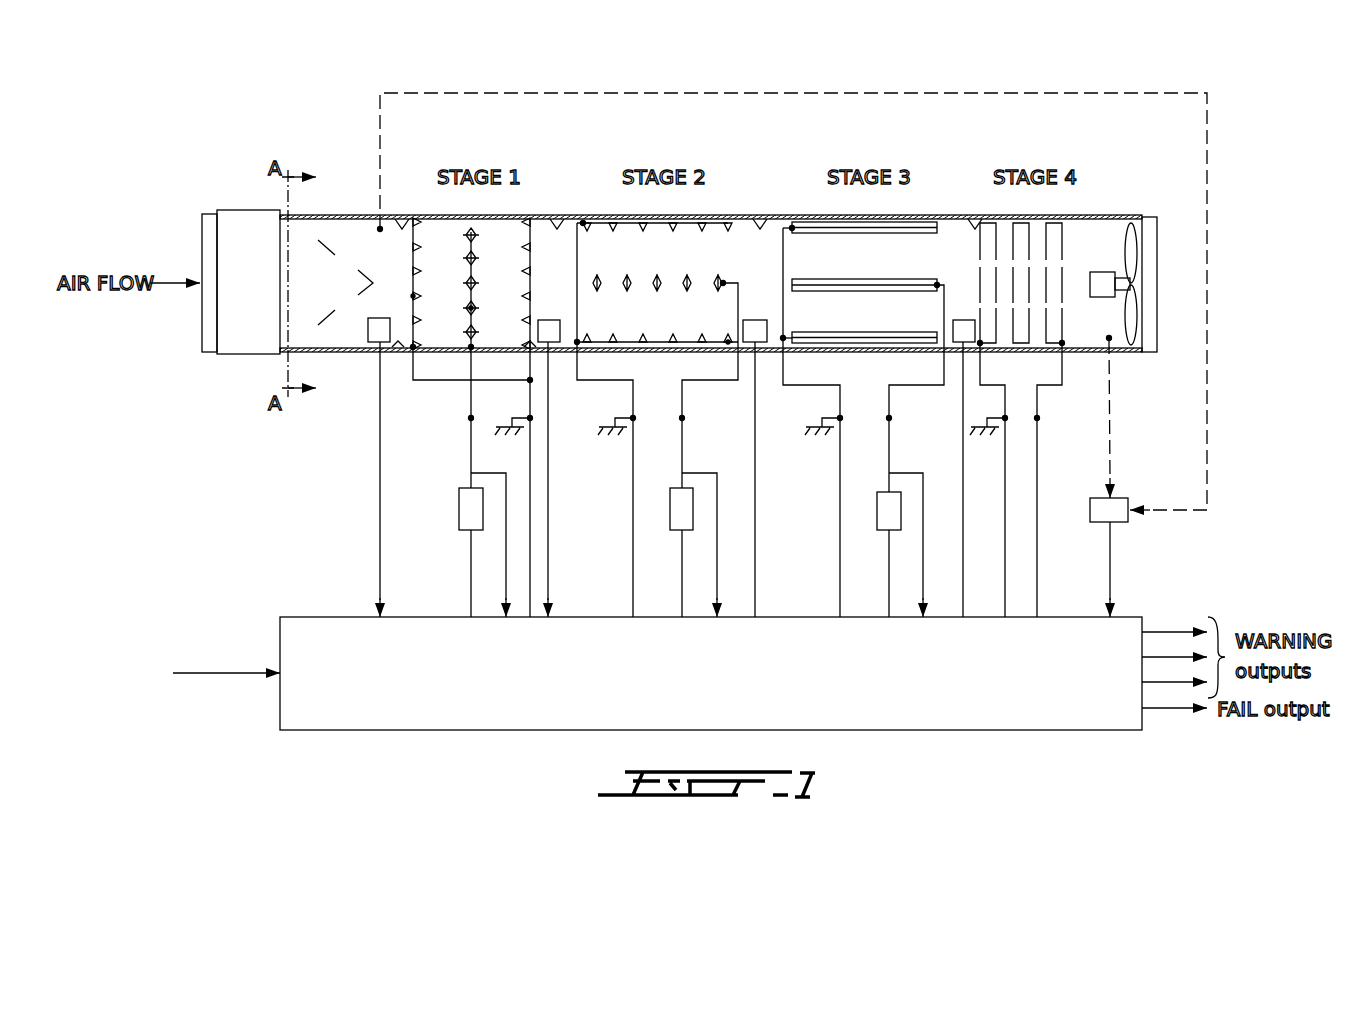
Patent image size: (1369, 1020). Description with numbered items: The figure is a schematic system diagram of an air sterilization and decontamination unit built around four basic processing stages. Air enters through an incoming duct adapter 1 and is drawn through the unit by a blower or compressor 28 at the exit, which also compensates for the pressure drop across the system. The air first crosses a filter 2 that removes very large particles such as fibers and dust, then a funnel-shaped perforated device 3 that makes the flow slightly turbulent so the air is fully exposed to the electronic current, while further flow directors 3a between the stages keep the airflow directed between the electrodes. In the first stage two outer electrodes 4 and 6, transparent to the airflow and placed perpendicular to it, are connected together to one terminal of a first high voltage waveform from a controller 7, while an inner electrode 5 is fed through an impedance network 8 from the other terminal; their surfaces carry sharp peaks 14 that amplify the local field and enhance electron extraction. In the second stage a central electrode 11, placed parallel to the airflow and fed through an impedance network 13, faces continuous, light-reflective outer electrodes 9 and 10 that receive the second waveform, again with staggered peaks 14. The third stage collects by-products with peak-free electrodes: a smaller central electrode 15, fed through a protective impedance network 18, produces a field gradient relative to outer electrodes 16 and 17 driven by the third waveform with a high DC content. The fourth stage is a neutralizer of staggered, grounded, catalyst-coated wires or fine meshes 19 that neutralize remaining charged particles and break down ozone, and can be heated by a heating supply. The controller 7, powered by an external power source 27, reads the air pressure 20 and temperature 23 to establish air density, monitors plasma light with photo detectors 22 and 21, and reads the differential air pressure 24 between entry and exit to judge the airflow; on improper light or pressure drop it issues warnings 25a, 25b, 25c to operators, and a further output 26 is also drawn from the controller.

The incoming duct adapter 1 is at (208, 240).
The filter 2 is at (240, 240).
The turbulence device 3 is at (328, 240).
The flow directors 3a is at (400, 216).
The outer electrode 4 is at (413, 214).
The inner electrode 5 is at (472, 230).
The outer electrode 6 is at (532, 216).
The controller 7 is at (330, 650).
The impedance network Z1 8 is at (460, 495).
The outer electrode 9 is at (698, 222).
The outer electrode 10 is at (657, 344).
The inner electrode 11 is at (635, 278).
The impedance network Z2 13 is at (671, 497).
The peaks 14 is at (470, 308).
The central electrode 15 is at (895, 283).
The outer electrode 16 is at (895, 227).
The outer electrode 17 is at (878, 336).
The impedance network Z3 18 is at (878, 495).
The grounded wire meshes 19 is at (1062, 275).
The air pressure sensor 20 is at (957, 343).
The photo detector 21 is at (753, 352).
The photo detector 22 is at (553, 352).
The temperature sensor 23 is at (368, 342).
The differential air pressure sensor 24 is at (1128, 500).
The warning 25a is at (1150, 631).
The warning 25b is at (1158, 656).
The warning 25c is at (1175, 681).
The fail output 26 is at (1158, 709).
The external power source 27 is at (207, 674).
The blower or compressor 28 is at (1130, 255).